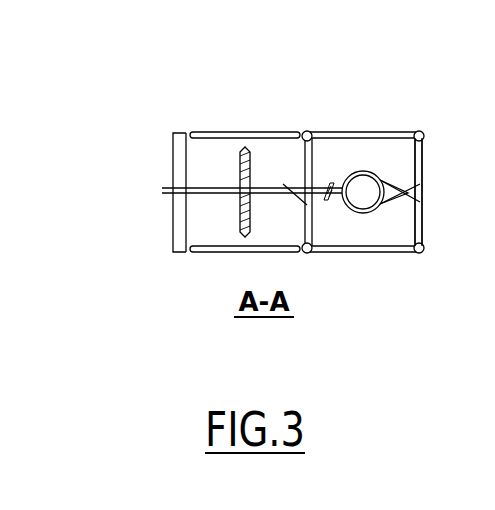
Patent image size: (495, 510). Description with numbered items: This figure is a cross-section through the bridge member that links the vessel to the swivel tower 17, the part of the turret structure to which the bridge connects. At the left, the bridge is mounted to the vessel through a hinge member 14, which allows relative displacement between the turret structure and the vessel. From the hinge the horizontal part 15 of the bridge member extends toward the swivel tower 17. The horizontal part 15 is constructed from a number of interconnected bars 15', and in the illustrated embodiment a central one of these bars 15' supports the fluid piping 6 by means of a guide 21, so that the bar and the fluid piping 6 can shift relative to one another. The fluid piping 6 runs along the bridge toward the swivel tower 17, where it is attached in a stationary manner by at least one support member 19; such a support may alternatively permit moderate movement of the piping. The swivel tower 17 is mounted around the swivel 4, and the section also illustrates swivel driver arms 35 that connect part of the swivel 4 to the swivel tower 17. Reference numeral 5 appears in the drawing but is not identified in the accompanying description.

The swivel 4 is at (363, 218).
The bore 5 is at (343, 174).
The fluid piping 6 is at (201, 196).
The hinge member 14 is at (170, 167).
The horizontal part 15 is at (245, 149).
The interconnected bars 15' is at (240, 191).
The swivel tower 17 is at (422, 160).
The support member 19 is at (290, 203).
The guide 21 is at (240, 183).
The swivel driver arms 35 is at (403, 200).